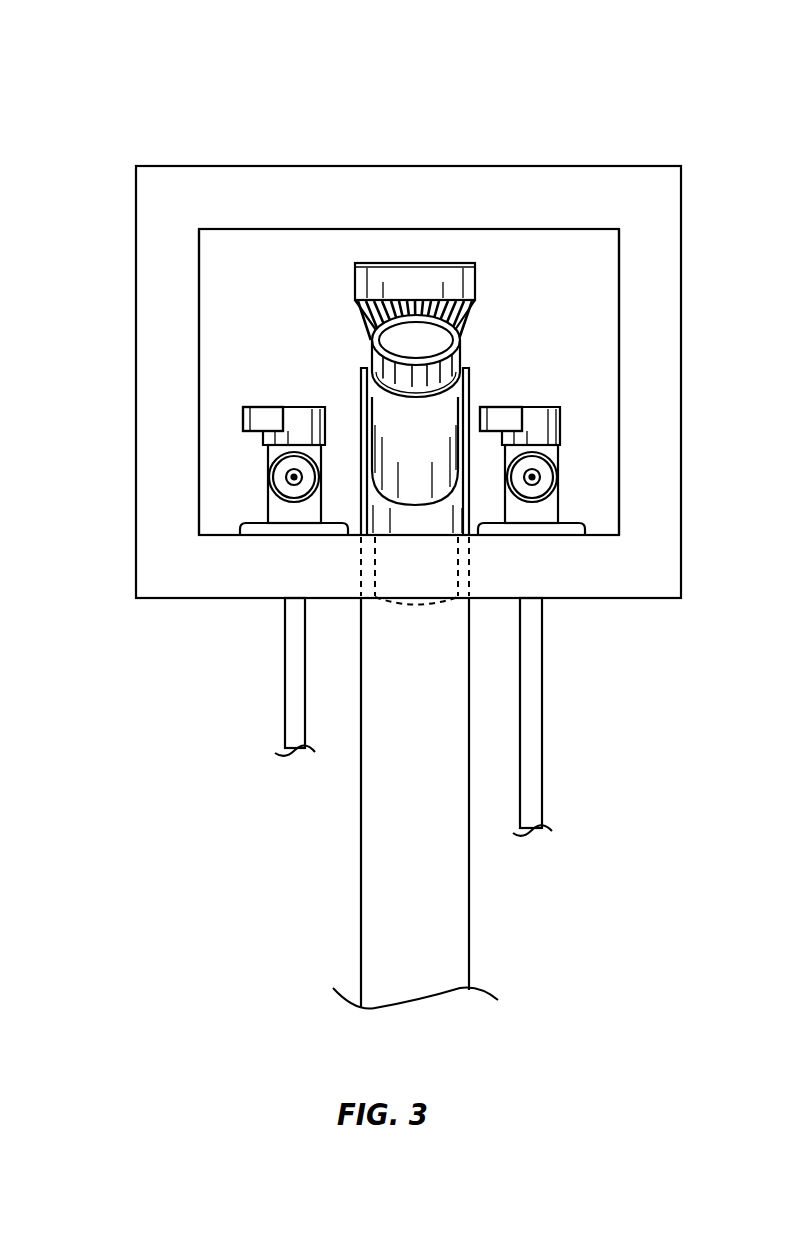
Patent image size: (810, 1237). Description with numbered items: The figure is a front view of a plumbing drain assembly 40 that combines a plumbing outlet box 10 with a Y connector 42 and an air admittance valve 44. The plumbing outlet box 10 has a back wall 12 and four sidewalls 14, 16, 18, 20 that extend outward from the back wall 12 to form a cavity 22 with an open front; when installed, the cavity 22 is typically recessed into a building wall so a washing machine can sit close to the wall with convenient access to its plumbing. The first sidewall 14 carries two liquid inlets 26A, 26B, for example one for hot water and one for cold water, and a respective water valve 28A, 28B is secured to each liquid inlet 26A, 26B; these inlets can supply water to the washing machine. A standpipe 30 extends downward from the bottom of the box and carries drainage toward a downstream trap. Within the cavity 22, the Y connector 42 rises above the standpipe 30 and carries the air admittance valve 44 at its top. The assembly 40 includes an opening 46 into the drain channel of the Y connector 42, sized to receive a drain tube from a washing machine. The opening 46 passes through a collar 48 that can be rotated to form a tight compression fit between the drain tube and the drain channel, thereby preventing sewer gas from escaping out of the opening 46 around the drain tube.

The plumbing outlet box 10 is at (197, 180).
The back wall 12 is at (252, 273).
The first sidewall 14 is at (223, 535).
The sidewall 16 is at (453, 228).
The sidewall 18 is at (197, 368).
The sidewall 20 is at (619, 342).
The cavity 22 is at (277, 296).
The first liquid inlet 26A is at (265, 530).
The second liquid inlet 26B is at (552, 532).
The first water valve 28A is at (297, 423).
The second water valve 28B is at (528, 423).
The standpipe 30 is at (360, 852).
The plumbing drain assembly 40 is at (638, 82).
The Y connector 42 is at (471, 380).
The air admittance valve 44 is at (478, 288).
The opening 46 is at (400, 340).
The collar 48 is at (462, 355).